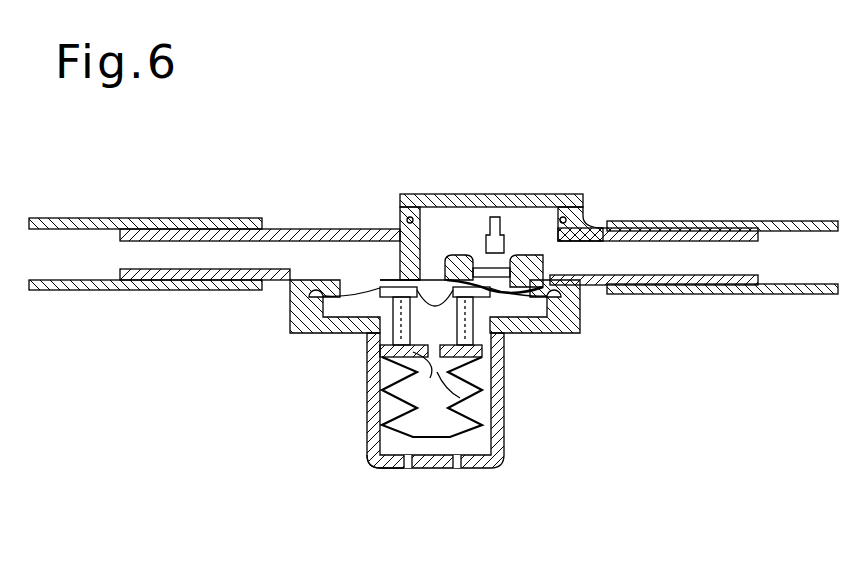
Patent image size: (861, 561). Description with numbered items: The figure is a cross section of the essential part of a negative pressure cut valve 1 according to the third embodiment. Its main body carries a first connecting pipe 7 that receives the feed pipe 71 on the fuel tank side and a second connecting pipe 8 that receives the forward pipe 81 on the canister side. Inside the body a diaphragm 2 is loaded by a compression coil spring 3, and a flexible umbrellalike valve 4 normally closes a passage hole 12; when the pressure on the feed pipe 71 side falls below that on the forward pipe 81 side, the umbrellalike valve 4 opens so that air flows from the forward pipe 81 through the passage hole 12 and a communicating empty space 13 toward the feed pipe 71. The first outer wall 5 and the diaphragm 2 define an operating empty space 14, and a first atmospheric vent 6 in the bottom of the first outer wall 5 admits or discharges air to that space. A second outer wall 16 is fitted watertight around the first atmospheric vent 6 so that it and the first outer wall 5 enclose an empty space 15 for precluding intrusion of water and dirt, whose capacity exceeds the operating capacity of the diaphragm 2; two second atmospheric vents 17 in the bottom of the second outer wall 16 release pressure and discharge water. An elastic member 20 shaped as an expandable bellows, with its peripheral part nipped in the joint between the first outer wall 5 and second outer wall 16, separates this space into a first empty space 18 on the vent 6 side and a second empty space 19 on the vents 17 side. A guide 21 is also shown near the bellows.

The negative pressure cut valve 1 is at (462, 186).
The diaphragm 2 is at (408, 283).
The compression coil spring 3 is at (392, 250).
The flexible umbrellalike valve 4 is at (487, 237).
The first outer wall 5 is at (533, 336).
The first atmospheric vent 6 is at (405, 393).
The first connecting pipe 7 is at (198, 229).
The second connecting pipe 8 is at (684, 228).
The passage hole 12 is at (522, 255).
The communicating empty space 13 is at (536, 262).
The operating empty space 14 is at (437, 313).
The empty space for precluding intrusion 15 is at (500, 418).
The second outer wall 16 is at (490, 460).
The second atmospheric vents 17 is at (408, 468).
The first empty space 18 is at (440, 400).
The second empty space 19 is at (390, 378).
The elastic member 20 is at (372, 460).
The guide 21 is at (500, 353).
The feed pipe 71 is at (65, 218).
The forward pipe 81 is at (787, 221).